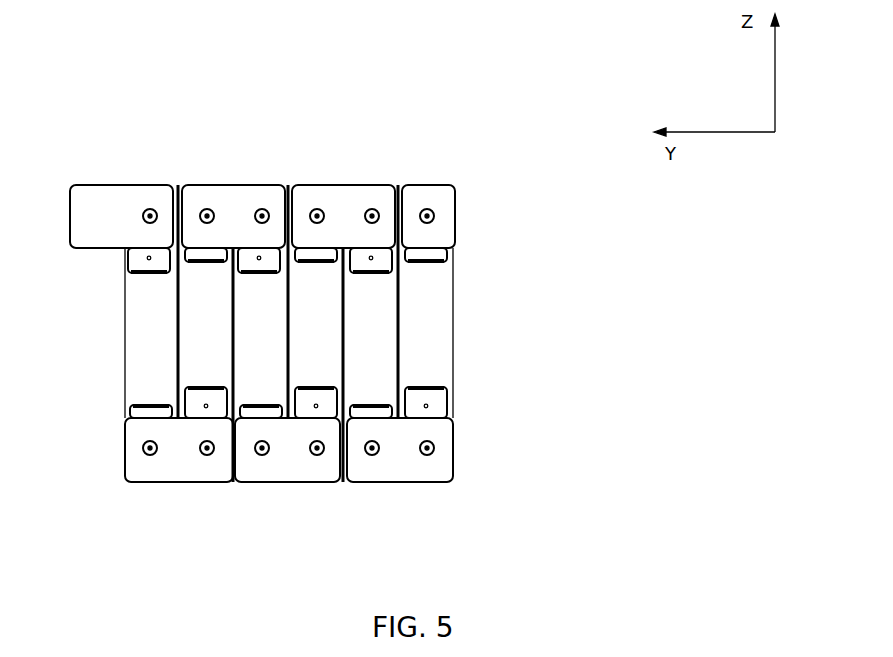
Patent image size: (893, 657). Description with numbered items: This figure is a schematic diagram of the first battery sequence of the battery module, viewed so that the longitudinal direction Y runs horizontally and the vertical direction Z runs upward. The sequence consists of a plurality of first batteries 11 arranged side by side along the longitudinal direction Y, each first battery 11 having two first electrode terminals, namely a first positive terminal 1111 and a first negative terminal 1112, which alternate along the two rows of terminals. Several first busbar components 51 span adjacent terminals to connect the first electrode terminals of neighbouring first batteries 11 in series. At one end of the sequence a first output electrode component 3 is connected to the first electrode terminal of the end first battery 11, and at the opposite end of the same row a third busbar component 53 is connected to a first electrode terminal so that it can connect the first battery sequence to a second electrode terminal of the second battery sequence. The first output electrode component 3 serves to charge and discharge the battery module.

The first output electrode component 3 is at (115, 197).
The first battery 11 is at (138, 338).
The first busbar component 51 is at (229, 192).
The third busbar component 53 is at (430, 192).
The first positive terminal 1111 is at (127, 410).
The first negative terminal 1112 is at (138, 255).